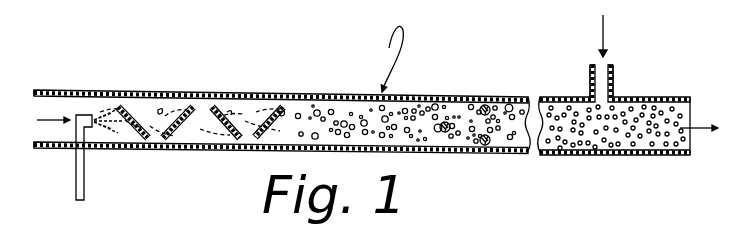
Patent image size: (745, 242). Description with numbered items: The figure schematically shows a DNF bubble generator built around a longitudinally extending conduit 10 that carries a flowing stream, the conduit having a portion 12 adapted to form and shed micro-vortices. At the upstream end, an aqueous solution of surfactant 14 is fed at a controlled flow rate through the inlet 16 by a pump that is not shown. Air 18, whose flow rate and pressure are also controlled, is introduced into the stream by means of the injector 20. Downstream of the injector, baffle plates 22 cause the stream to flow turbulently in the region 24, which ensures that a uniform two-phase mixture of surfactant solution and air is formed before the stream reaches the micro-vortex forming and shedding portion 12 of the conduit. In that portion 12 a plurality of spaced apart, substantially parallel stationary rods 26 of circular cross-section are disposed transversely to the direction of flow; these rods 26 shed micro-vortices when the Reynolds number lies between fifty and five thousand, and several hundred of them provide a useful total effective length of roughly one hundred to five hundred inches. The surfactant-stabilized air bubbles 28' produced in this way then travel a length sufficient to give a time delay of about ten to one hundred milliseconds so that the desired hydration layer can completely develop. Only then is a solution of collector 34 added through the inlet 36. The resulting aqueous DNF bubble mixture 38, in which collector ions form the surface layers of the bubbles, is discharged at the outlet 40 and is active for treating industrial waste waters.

The conduit 10 is at (107, 91).
The conduit portion 12 is at (482, 92).
The aqueous solution of surfactant 14 is at (47, 117).
The inlet 16 is at (35, 136).
The air 18 is at (114, 128).
The injector 20 is at (76, 172).
The baffle plates 22 is at (267, 125).
The region 24 is at (379, 59).
The stationary rods 26 is at (482, 136).
The surfactant-stabilized air bubbles 28' is at (615, 157).
The solution of collector 34 is at (600, 33).
The inlet 36 is at (600, 93).
The aqueous DNF bubble mixture 38 is at (703, 128).
The outlet 40 is at (687, 143).